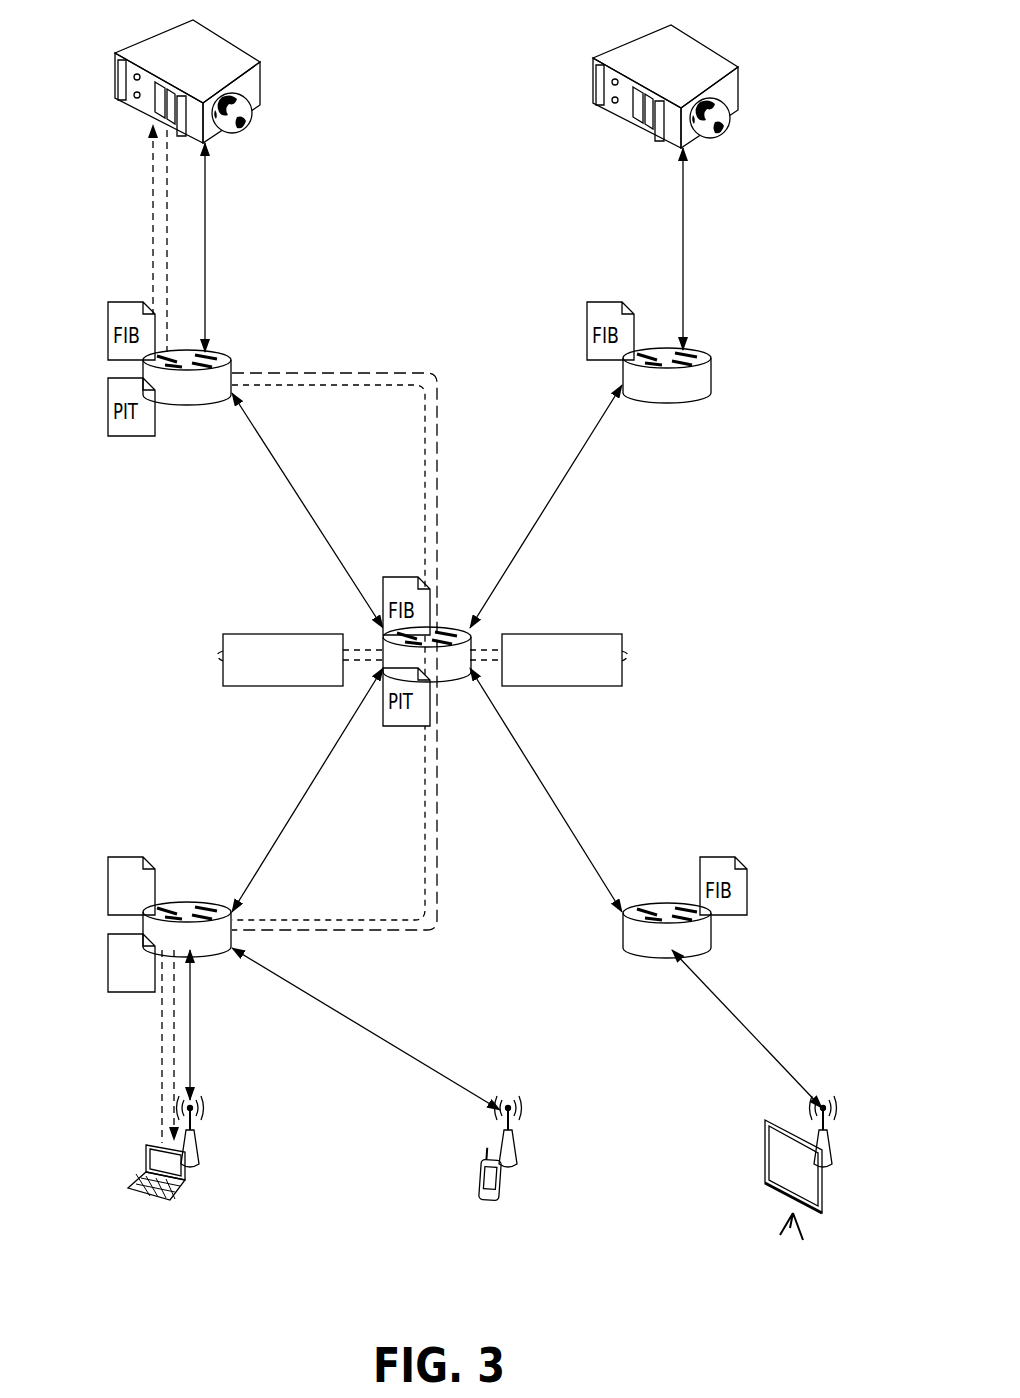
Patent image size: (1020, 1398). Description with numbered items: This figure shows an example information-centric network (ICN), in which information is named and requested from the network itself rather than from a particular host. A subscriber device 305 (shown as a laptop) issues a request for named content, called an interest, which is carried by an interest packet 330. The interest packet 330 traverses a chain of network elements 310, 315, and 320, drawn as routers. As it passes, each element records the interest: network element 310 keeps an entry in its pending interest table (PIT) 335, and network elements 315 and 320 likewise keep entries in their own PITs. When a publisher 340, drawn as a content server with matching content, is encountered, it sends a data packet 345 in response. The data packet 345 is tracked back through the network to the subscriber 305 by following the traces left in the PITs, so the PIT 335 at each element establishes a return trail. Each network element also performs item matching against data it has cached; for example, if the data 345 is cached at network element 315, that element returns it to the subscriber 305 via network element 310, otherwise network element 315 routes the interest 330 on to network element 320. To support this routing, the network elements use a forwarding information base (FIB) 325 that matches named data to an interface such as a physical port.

The device 305 is at (146, 1138).
The network element 310 is at (205, 950).
The network element 315 is at (443, 672).
The network element 320 is at (233, 352).
The forwarding information base 325 is at (110, 883).
The interest packet 330 is at (282, 634).
The pending interest table 335 is at (110, 957).
The publisher 340 is at (158, 42).
The data packet 345 is at (560, 634).